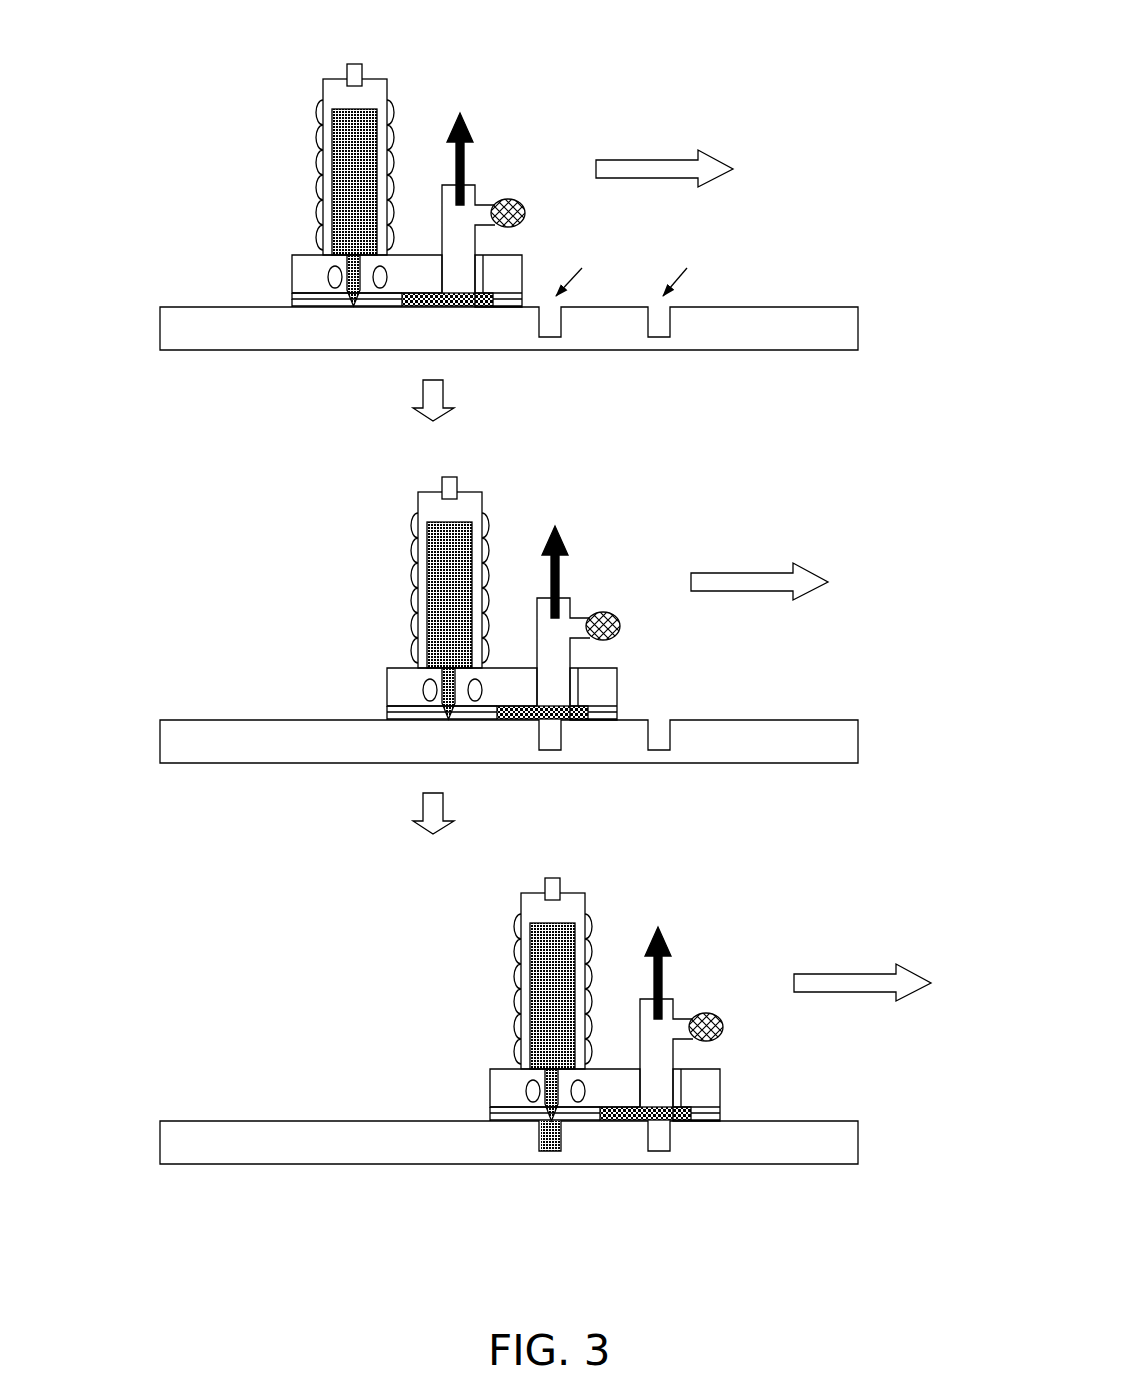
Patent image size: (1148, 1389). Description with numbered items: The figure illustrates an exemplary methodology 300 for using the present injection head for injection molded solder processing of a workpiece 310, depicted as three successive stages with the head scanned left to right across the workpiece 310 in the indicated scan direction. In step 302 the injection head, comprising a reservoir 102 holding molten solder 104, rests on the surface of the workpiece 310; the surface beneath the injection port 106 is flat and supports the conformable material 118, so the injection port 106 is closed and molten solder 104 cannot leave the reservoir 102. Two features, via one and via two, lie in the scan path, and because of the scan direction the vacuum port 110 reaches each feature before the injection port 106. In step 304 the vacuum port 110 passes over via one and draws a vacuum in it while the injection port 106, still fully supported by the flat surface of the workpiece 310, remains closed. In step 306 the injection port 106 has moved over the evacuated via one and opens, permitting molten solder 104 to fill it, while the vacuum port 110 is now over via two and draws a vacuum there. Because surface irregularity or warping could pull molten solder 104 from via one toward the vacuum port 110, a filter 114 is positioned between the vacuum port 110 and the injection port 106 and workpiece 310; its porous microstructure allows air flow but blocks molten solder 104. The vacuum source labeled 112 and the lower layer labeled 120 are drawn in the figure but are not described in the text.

The methodology 300 is at (799, 31).
The step 302 is at (138, 132).
The step 304 is at (133, 558).
The step 306 is at (153, 979).
The reservoir 102 is at (330, 126).
The molten solder 104 is at (358, 216).
The injection port 106 is at (345, 312).
The vacuum port 110 is at (470, 307).
The vacuum 112 is at (544, 107).
The filter 114 is at (490, 295).
The conformable material 118 is at (288, 289).
The lower seal layer 120 is at (288, 301).
The workpiece 310 is at (152, 335).